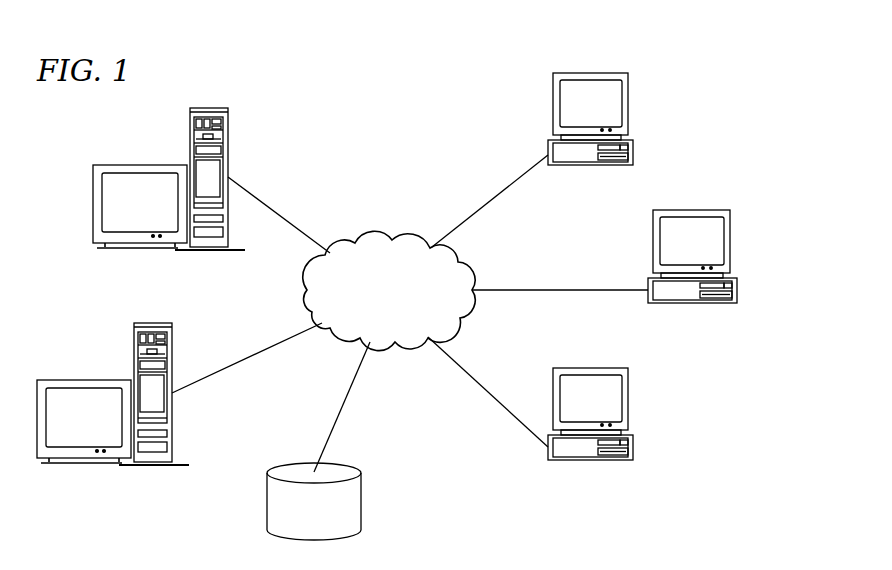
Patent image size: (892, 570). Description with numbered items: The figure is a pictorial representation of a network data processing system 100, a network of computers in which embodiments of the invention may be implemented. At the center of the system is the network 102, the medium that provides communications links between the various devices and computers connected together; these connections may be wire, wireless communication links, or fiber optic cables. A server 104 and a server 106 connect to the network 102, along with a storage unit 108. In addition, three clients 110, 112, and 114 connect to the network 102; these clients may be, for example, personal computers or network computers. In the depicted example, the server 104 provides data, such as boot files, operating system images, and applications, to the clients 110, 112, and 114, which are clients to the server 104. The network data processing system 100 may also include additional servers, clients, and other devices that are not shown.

The network data processing system 100 is at (302, 104).
The network 102 is at (378, 318).
The server 104 is at (135, 342).
The server 106 is at (190, 126).
The storage unit 108 is at (267, 500).
The client 110 is at (628, 112).
The client 112 is at (730, 247).
The client 114 is at (628, 403).